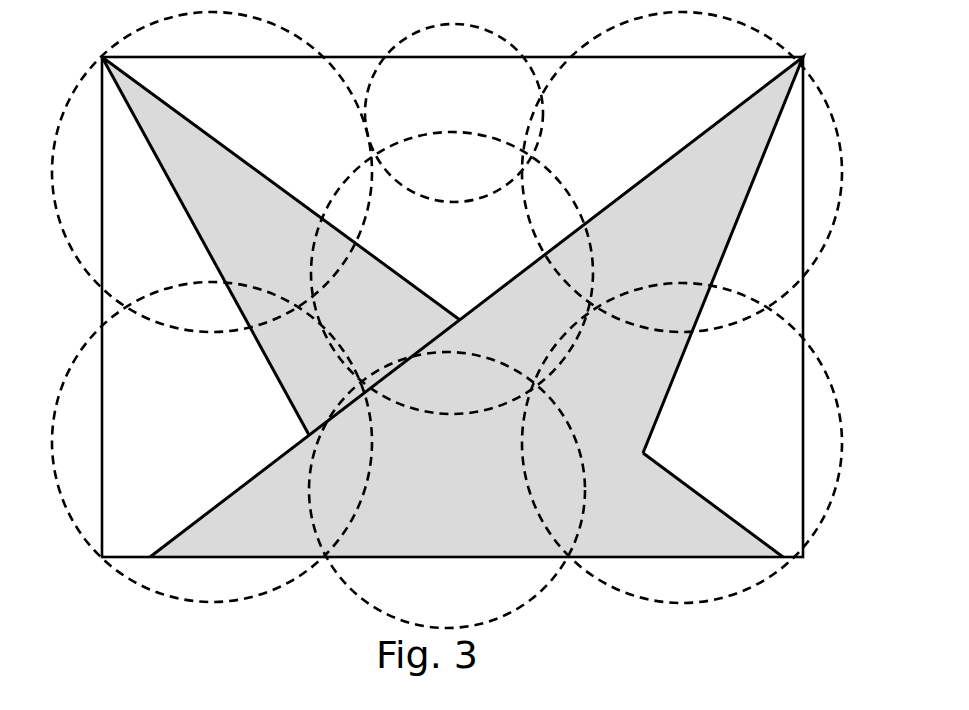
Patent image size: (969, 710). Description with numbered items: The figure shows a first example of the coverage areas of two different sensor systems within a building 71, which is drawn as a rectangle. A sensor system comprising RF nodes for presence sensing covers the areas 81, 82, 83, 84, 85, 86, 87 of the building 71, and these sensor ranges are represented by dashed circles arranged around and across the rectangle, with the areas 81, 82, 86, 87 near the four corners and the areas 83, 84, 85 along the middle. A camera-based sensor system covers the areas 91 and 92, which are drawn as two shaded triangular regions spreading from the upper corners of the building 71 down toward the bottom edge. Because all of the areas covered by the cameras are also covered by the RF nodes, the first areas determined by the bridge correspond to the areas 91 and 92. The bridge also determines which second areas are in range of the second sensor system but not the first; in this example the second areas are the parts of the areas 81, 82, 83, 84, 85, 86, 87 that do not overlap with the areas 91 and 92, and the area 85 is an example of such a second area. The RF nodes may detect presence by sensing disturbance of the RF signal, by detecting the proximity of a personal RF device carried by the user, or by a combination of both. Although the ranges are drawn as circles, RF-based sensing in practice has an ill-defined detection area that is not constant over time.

The building 71 is at (803, 318).
The area 81 is at (212, 172).
The area 82 is at (212, 442).
The area 83 is at (447, 490).
The area 84 is at (452, 273).
The area 85 is at (454, 113).
The area 86 is at (682, 172).
The area 87 is at (682, 443).
The area 91 is at (452, 307).
The area 92 is at (476, 307).